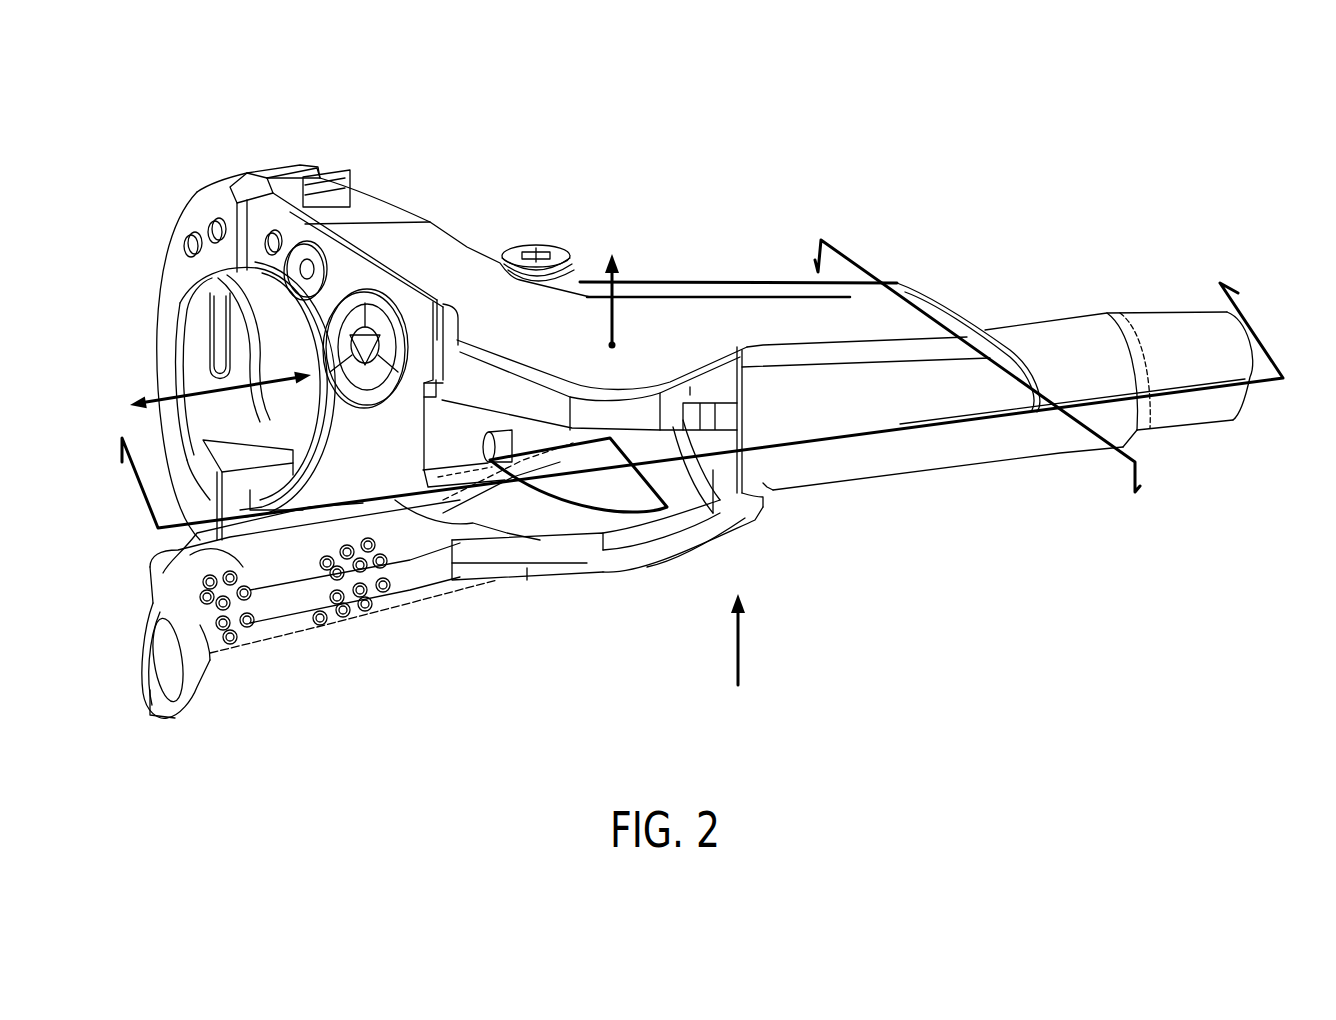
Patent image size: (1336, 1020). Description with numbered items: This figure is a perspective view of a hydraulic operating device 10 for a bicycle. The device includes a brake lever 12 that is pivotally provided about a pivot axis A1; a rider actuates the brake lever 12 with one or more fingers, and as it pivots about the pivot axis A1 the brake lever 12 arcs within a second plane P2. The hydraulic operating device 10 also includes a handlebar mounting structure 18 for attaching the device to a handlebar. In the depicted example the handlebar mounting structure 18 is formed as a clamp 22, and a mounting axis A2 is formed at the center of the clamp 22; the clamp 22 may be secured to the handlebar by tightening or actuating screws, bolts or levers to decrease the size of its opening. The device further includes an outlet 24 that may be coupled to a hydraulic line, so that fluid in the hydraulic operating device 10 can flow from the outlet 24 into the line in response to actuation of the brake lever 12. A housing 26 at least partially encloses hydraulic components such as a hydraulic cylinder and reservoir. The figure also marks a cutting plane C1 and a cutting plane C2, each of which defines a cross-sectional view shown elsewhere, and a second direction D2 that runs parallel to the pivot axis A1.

The hydraulic operating device 10 is at (1125, 148).
The brake lever 12 is at (165, 578).
The handlebar mounting structure 18 is at (133, 366).
The clamp 22 is at (248, 178).
The outlet 24 is at (1272, 343).
The housing 26 is at (781, 283).
The pivot axis A1 is at (610, 322).
The mounting axis A2 is at (245, 388).
The cutting plane C1 is at (1263, 382).
The cutting plane C2 is at (830, 252).
The second direction D2 is at (736, 660).
The second plane P2 is at (497, 463).